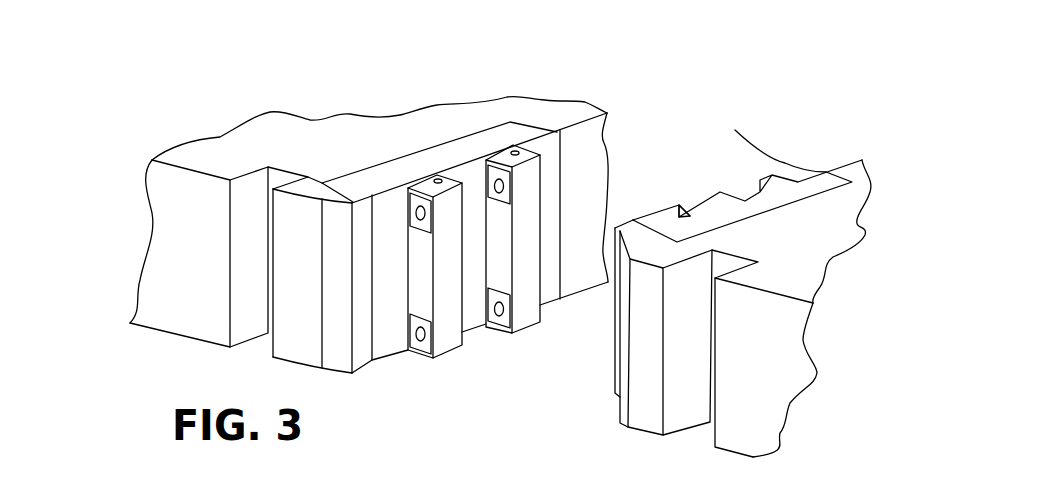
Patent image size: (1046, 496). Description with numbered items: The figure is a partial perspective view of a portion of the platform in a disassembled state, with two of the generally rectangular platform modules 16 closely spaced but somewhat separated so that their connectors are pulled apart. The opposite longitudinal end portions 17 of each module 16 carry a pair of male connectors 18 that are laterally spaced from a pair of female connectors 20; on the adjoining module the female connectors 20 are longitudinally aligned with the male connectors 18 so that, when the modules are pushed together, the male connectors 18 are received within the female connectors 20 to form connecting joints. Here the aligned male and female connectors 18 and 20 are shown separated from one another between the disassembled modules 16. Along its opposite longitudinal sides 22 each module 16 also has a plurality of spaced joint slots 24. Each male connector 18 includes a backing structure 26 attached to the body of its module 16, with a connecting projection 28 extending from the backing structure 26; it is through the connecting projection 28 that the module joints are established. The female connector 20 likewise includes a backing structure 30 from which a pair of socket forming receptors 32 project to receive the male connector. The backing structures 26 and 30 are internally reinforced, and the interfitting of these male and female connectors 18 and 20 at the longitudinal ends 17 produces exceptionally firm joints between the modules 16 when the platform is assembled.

The platform module 16 is at (295, 133).
The longitudinal end portion 17 is at (613, 126).
The male connector 18 is at (457, 367).
The female connector 20 is at (608, 340).
The longitudinal side 22 is at (163, 266).
The joint slot 24 is at (716, 262).
The backing structure 26 is at (398, 177).
The connecting projection 28 is at (418, 358).
The backing structure 30 is at (708, 219).
The socket forming receptor 32 is at (634, 222).